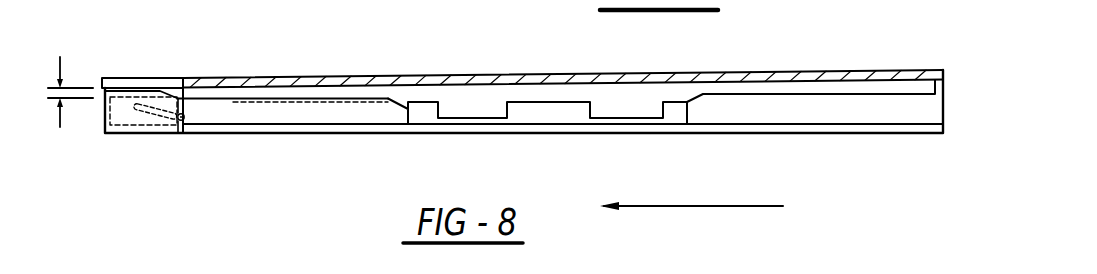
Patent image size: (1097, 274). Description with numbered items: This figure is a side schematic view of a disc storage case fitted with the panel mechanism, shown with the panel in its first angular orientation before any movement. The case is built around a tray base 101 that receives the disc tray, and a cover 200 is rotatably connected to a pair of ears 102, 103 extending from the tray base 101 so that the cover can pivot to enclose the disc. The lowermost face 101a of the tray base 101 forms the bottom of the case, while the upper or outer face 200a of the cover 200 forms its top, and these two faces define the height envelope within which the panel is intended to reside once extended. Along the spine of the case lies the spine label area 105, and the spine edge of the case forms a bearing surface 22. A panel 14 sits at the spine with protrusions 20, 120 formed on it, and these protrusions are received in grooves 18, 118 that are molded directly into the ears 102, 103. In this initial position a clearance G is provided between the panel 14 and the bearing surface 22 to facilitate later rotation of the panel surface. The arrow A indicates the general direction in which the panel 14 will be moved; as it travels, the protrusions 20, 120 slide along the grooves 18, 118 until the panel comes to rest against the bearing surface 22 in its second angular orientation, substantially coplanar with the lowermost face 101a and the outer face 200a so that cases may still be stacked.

The panel 14 is at (148, 78).
The bearing surface 22 is at (105, 113).
The spine label area 105 is at (102, 128).
The groove 18 is at (161, 149).
The groove 118 is at (151, 115).
The protrusion 20 is at (240, 158).
The protrusion 120 is at (185, 117).
The ear 102 is at (284, 144).
The ear 103 is at (262, 114).
The lowermost face of the tray base 101a is at (452, 135).
The tray base 101 is at (501, 148).
The cover 200 is at (563, 44).
The upper or outer face of the CD case 200a is at (740, 70).
The clearance G is at (70, 76).
The arrow A is at (691, 220).